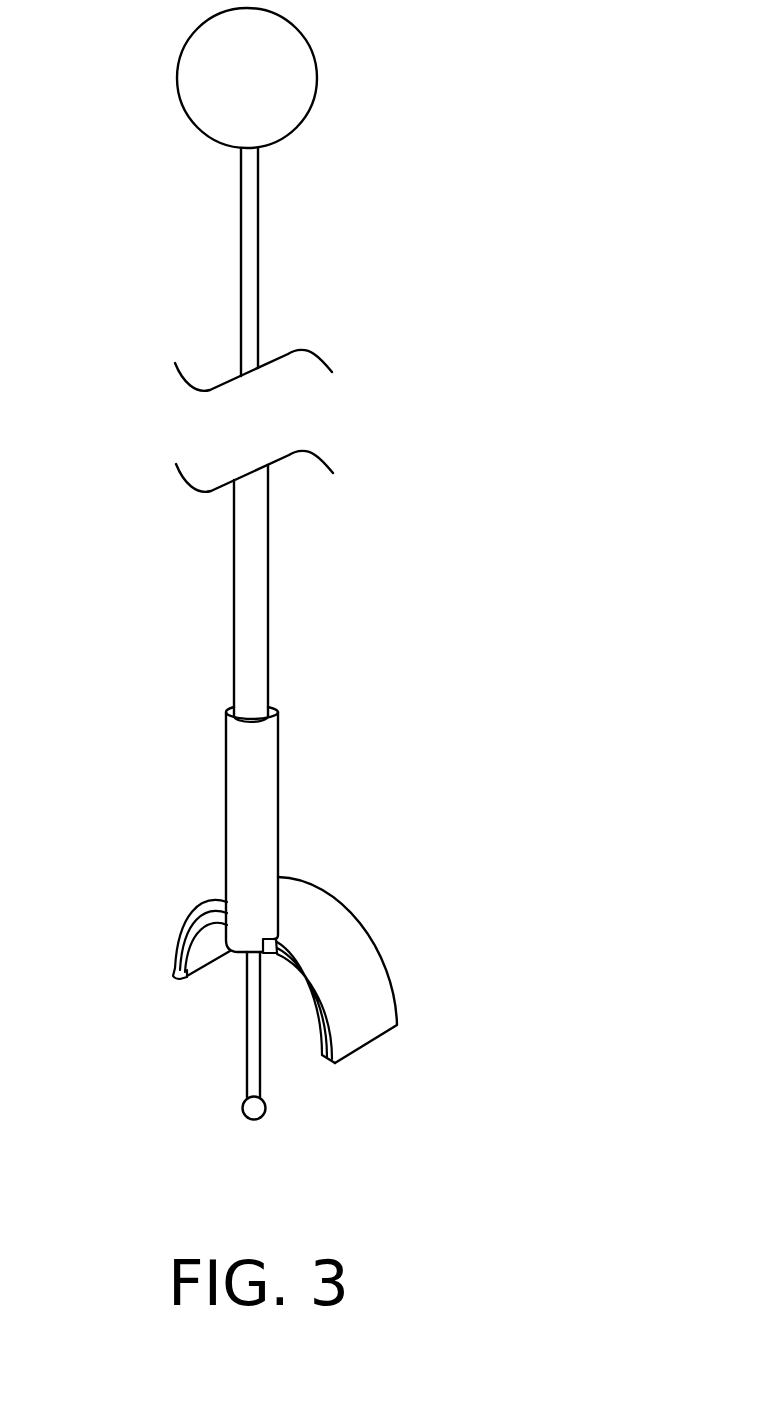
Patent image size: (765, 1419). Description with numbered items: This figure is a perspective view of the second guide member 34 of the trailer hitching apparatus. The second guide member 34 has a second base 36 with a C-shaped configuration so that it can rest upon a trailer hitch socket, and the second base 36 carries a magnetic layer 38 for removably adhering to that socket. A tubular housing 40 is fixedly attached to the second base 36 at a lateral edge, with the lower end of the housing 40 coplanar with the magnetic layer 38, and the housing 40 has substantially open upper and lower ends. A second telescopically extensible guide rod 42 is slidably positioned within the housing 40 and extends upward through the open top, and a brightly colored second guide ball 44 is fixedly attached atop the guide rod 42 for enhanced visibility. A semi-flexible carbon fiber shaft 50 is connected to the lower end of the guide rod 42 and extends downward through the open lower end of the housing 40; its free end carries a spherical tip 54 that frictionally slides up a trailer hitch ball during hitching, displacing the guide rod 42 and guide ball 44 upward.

The second guide member 34 is at (530, 363).
The second base 36 is at (391, 880).
The magnetic layer 38 is at (195, 977).
The tubular housing 40 is at (222, 779).
The second telescopically extensible guide rod 42 is at (232, 572).
The second guide ball 44 is at (177, 92).
The semi-flexible shaft 50 is at (247, 1032).
The spherical tip 54 is at (240, 1112).